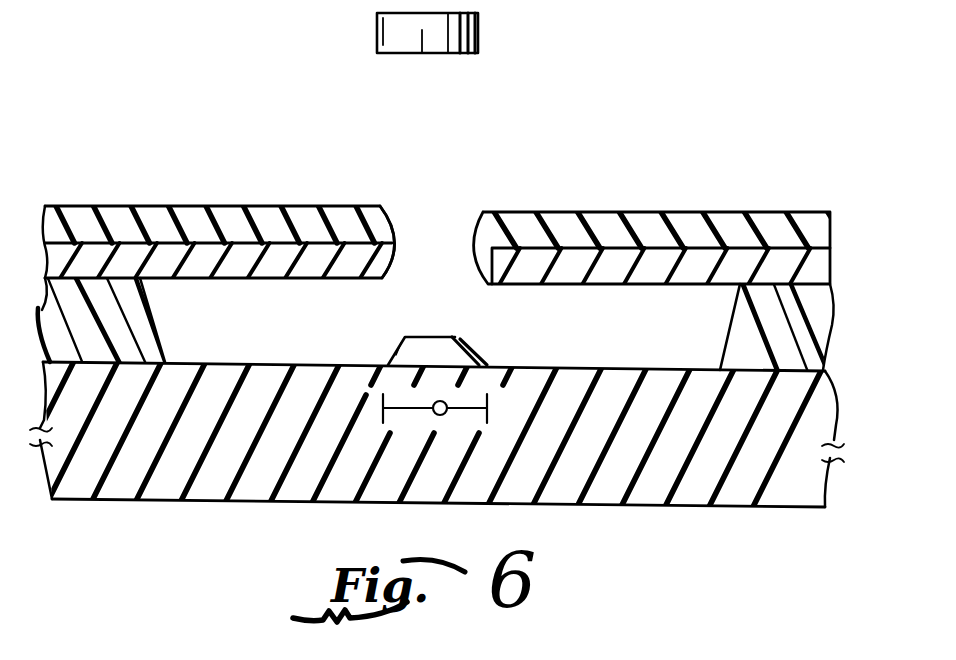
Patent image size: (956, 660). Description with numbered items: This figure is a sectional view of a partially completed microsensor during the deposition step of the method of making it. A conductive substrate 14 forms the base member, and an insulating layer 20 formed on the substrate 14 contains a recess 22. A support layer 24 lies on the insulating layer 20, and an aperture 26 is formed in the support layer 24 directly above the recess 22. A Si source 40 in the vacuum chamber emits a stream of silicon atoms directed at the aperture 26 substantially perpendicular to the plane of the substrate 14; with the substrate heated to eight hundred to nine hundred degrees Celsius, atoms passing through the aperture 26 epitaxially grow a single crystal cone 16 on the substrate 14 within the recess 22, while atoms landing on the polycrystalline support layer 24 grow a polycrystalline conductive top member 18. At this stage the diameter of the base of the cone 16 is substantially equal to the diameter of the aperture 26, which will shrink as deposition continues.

The conductive substrate 14 is at (703, 495).
The cone 16 is at (473, 344).
The conductive top member 18 is at (235, 220).
The insulating layer 20 is at (93, 328).
The recess 22 is at (250, 345).
The support layer 24 is at (147, 246).
The aperture 26 is at (392, 243).
The Si source 40 is at (480, 33).